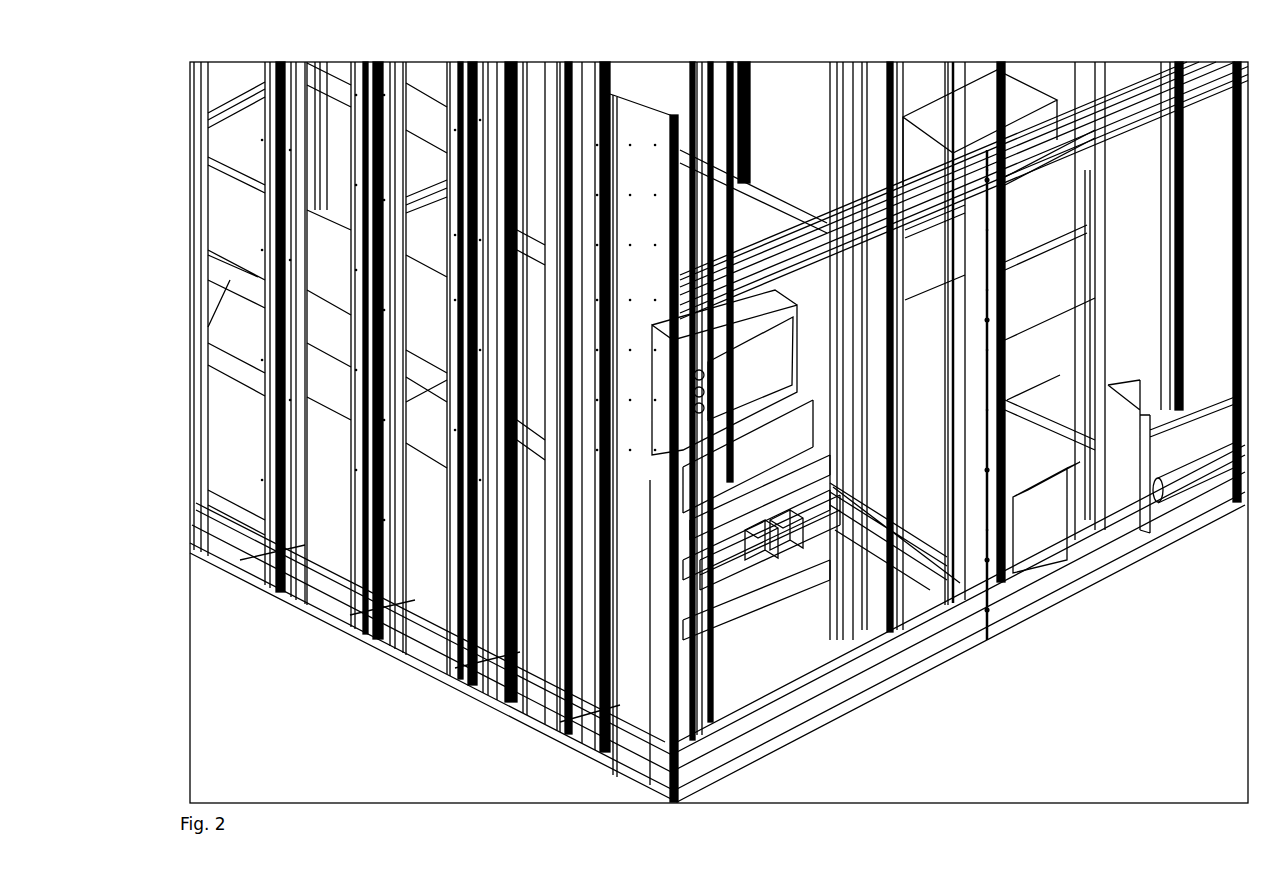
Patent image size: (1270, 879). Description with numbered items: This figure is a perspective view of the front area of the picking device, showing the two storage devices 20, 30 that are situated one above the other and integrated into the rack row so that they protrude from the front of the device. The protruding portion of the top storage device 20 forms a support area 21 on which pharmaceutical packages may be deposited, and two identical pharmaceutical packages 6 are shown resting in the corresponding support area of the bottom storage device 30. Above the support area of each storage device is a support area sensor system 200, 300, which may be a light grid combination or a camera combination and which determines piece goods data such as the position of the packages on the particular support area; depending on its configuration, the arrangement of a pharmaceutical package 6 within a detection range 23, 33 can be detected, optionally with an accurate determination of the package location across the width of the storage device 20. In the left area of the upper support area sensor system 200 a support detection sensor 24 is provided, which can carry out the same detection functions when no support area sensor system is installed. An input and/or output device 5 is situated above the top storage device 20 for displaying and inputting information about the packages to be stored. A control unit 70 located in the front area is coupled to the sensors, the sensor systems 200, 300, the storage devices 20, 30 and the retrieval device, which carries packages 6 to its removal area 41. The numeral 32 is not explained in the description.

The input and/or output device 5 is at (755, 365).
The storage device 20 is at (232, 222).
The storage device 30 is at (245, 318).
The support detection sensor 24 is at (372, 633).
The support area sensor system 200 is at (697, 497).
The detection range 23 is at (689, 540).
The tray 32 is at (708, 577).
The detection range 33 is at (700, 630).
The support area 21 is at (770, 543).
The pharmaceutical package 6 is at (808, 557).
The support area sensor system 300 is at (900, 600).
The control unit 70 is at (1050, 530).
The removal area 41 is at (1193, 470).